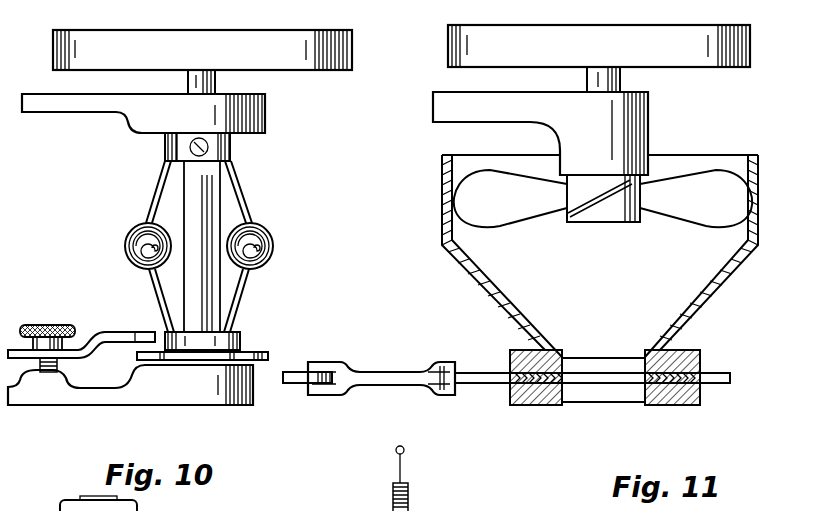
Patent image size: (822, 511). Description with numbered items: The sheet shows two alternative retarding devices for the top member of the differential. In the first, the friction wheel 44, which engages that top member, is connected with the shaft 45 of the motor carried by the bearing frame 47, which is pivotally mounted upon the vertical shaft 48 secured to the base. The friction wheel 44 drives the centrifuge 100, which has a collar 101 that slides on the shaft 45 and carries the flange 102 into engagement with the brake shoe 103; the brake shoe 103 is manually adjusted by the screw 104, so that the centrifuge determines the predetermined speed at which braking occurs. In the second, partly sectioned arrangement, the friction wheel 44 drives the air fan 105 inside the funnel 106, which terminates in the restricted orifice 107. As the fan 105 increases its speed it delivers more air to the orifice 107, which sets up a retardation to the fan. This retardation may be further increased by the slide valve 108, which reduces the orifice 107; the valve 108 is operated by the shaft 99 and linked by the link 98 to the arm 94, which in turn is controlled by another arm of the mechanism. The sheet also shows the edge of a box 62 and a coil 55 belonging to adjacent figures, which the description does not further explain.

In FIG. 10, the friction wheel 44 is at (294, 30).
In FIG. 11, the friction wheel 44 is at (545, 29).
In FIG. 10, the shaft 45 is at (215, 82).
In FIG. 11, the shaft 45 is at (620, 78).
In FIG. 10, the bearing frame 47 is at (75, 105).
In FIG. 11, the bearing frame 47 is at (540, 133).
In FIG. 10, the vertical shaft 48 is at (211, 249).
In FIG. 11, the vertical shaft 48 is at (613, 133).
In FIG. 10, the centrifuge 100 is at (263, 233).
In FIG. 10, the collar 101 is at (221, 332).
In FIG. 10, the flange 102 is at (252, 350).
In FIG. 10, the brake shoe 103 is at (138, 333).
In FIG. 10, the screw 104 is at (65, 331).
In FIG. 10, the arm 94 is at (295, 372).
In FIG. 10, the link 98 is at (398, 369).
In FIG. 11, the shaft 99 is at (501, 373).
In FIG. 11, the air fan 105 is at (605, 212).
In FIG. 11, the funnel 106 is at (470, 258).
In FIG. 11, the orifice 107 is at (614, 350).
In FIG. 11, the slide valve 108 is at (592, 380).
In FIG. 10, the box 62 is at (93, 496).
In FIG. 11, the coil 55 is at (410, 500).